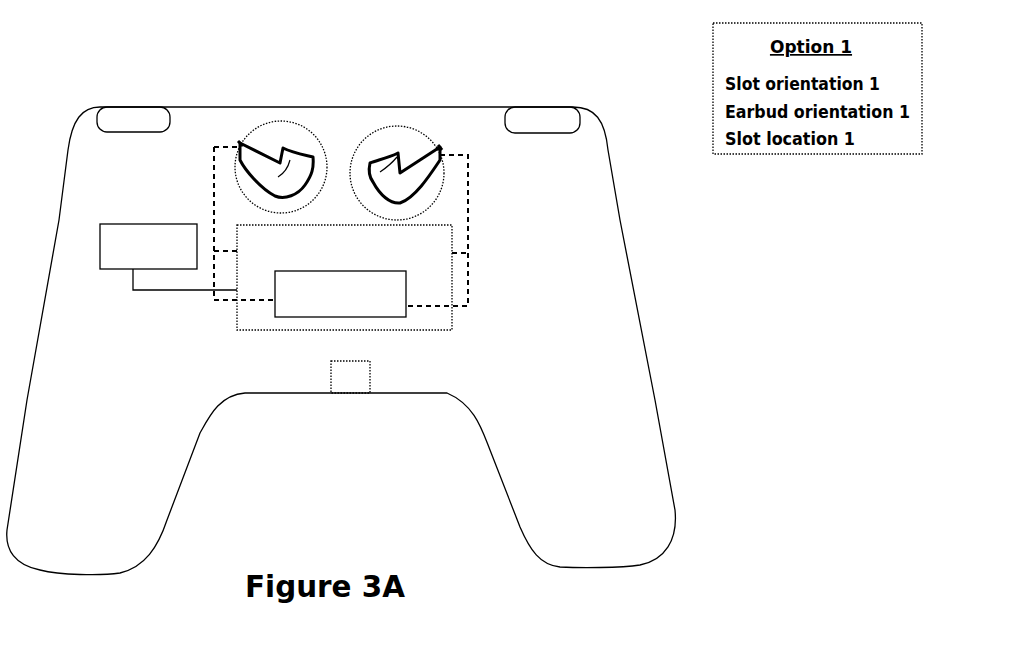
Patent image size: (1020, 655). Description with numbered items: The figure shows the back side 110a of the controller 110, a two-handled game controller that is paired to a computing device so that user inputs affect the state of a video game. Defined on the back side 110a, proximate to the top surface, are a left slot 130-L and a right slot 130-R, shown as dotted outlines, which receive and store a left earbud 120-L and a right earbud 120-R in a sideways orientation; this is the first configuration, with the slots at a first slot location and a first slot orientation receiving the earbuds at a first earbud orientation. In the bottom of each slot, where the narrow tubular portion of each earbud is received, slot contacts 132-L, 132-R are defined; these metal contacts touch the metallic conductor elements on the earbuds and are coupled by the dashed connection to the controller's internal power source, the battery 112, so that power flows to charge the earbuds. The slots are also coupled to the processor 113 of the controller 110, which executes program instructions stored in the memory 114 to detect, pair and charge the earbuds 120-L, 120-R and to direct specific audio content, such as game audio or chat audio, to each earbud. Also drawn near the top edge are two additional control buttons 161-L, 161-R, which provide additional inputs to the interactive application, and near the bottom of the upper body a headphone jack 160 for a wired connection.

The controller 110 is at (341, 341).
The back side 110a is at (607, 269).
The battery 112 is at (341, 232).
The processor 113 is at (344, 277).
The memory 114 is at (117, 260).
The left earbud 120-L is at (282, 165).
The right earbud 120-R is at (397, 160).
The left slot 130-L is at (233, 163).
The right slot 130-R is at (428, 190).
The slot contact 132-L is at (240, 143).
The slot contact 132-R is at (440, 148).
The headphone jack 160 is at (339, 393).
The control button 161-L is at (123, 120).
The control button 161-R is at (545, 118).